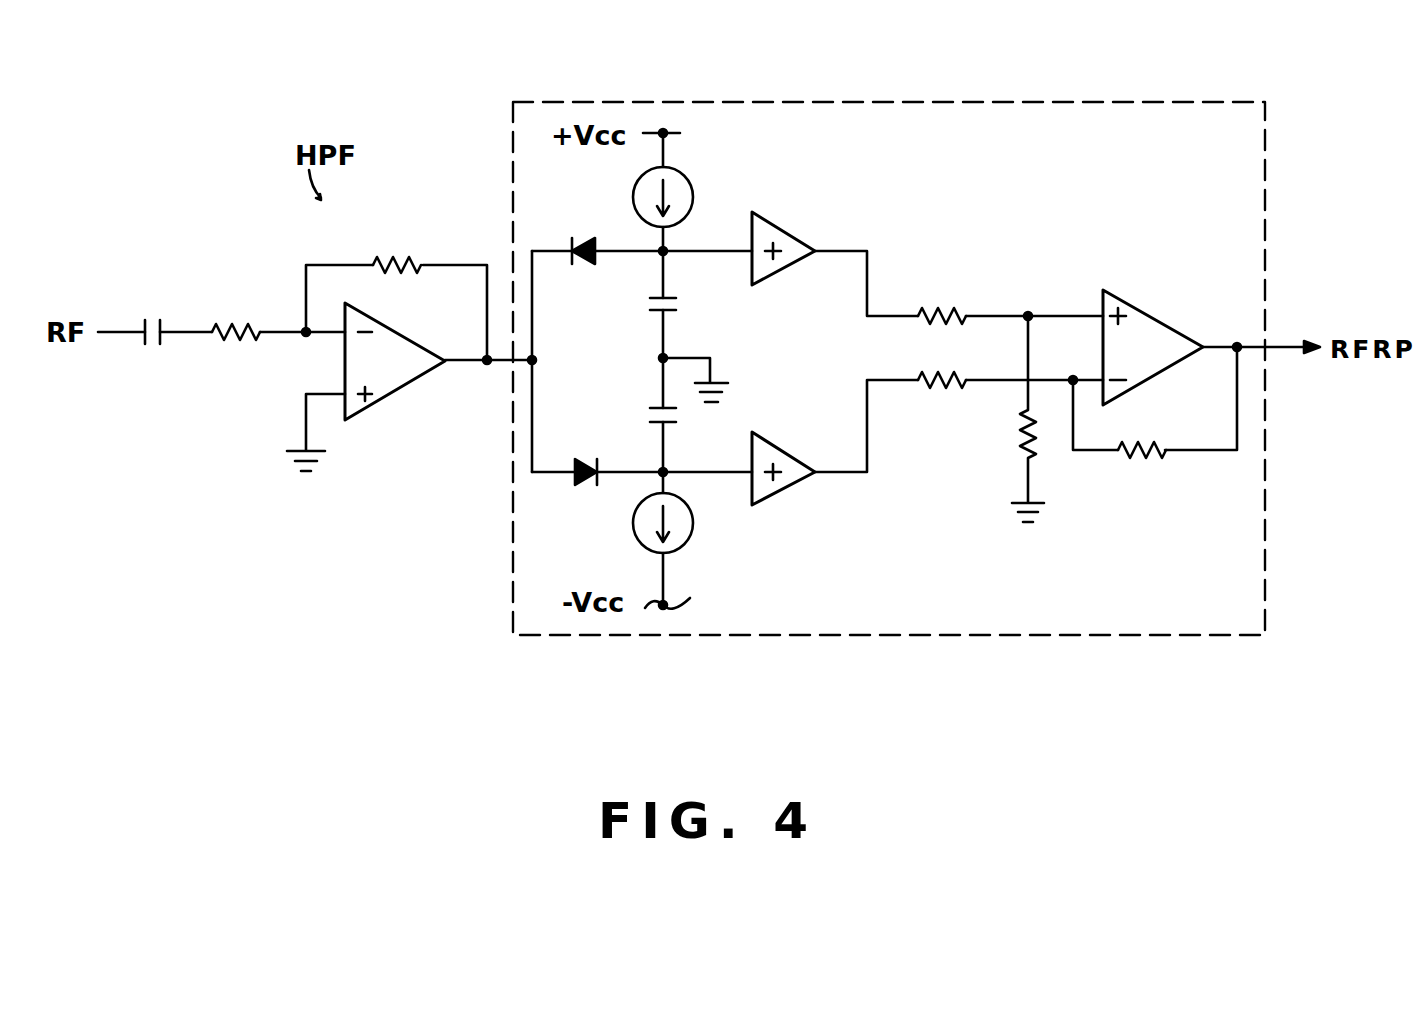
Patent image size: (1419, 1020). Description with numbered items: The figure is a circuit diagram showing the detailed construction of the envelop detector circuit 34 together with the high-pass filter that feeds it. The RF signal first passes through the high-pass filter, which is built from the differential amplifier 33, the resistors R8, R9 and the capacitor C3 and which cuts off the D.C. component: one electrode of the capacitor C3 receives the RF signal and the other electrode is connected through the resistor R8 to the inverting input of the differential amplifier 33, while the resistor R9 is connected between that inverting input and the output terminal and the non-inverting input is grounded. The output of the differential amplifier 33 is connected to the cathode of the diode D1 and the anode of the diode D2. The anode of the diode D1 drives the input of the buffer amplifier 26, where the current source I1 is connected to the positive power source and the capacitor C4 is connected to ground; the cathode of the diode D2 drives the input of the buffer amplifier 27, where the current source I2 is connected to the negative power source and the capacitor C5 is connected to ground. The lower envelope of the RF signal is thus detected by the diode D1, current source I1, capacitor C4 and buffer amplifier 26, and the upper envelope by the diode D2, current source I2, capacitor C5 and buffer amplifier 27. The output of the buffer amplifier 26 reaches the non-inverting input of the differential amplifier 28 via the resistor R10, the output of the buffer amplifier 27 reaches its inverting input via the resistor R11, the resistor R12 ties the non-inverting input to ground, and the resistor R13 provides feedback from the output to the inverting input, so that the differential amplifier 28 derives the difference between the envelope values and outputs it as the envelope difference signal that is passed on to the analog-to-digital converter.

The buffer amplifier 26 is at (806, 208).
The buffer amplifier 27 is at (778, 440).
The differential amplifier 28 is at (1163, 320).
The differential amplifier 33 is at (410, 384).
The envelop detector circuit 34 is at (872, 100).
The capacitor C3 is at (154, 315).
The resistor R8 is at (233, 315).
The resistor R9 is at (396, 251).
The current source I1 is at (693, 188).
The current source I2 is at (696, 530).
The diode D1 is at (583, 265).
The diode D2 is at (590, 460).
The capacitor C4 is at (679, 305).
The capacitor C5 is at (678, 415).
The resistor R10 is at (932, 307).
The resistor R11 is at (946, 392).
The resistor R12 is at (1018, 447).
The resistor R13 is at (1150, 462).